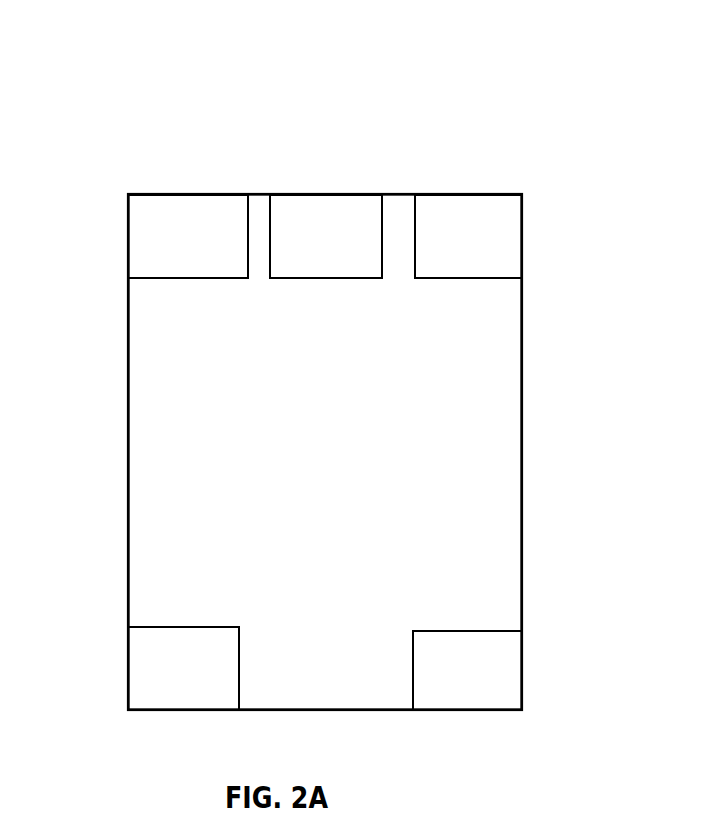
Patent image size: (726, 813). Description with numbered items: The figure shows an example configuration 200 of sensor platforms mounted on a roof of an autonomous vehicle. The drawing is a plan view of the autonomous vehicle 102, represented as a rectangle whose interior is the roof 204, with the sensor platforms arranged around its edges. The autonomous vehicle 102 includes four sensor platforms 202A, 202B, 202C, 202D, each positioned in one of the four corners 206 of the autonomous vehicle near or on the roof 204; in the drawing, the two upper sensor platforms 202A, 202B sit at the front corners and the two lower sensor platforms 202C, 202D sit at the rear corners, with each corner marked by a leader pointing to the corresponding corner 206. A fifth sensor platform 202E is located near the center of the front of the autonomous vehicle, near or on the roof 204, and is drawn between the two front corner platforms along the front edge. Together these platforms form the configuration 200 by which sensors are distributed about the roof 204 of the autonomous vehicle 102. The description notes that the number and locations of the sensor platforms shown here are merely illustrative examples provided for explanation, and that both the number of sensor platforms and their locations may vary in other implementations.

The configuration 200 is at (540, 105).
The autonomous vehicle 102 is at (463, 184).
The roof 204 is at (307, 456).
The sensor platform 202A is at (163, 250).
The sensor platform 202B is at (442, 250).
The sensor platform 202C is at (158, 680).
The sensor platform 202D is at (441, 680).
The sensor platform 202E is at (300, 250).
The corners 206 is at (128, 222).